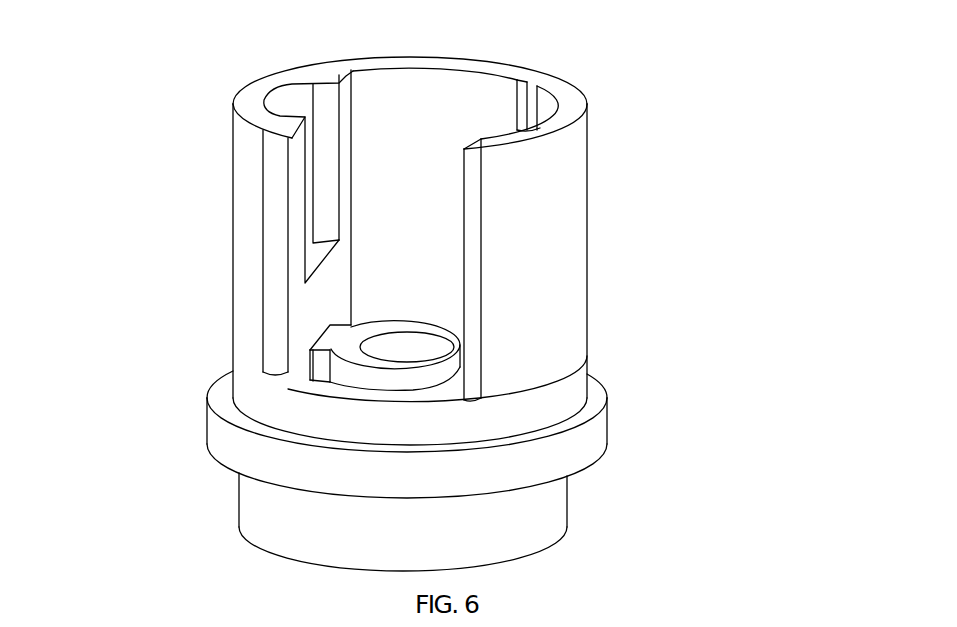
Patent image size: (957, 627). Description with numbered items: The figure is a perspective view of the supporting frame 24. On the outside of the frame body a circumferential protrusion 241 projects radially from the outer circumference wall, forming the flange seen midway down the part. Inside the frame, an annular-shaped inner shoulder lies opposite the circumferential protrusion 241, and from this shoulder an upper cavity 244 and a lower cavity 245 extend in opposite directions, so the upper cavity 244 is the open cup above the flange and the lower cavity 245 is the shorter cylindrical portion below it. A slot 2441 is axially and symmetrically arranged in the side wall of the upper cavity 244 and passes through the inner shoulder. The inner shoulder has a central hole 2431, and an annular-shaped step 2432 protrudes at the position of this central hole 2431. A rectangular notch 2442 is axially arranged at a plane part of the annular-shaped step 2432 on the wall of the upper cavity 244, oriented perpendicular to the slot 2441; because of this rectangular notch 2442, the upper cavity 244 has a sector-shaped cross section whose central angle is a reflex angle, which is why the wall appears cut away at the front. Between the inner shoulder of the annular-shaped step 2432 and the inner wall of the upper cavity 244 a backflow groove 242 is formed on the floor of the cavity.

The supporting frame 24 is at (226, 74).
The upper cavity 244 is at (538, 226).
The slot 2441 is at (587, 102).
The rectangular notch 2442 is at (278, 235).
The backflow groove 242 is at (300, 374).
The central hole 2431 is at (410, 344).
The annular-shaped step 2432 is at (330, 333).
The circumferential protrusion 241 is at (587, 440).
The lower cavity 245 is at (548, 523).